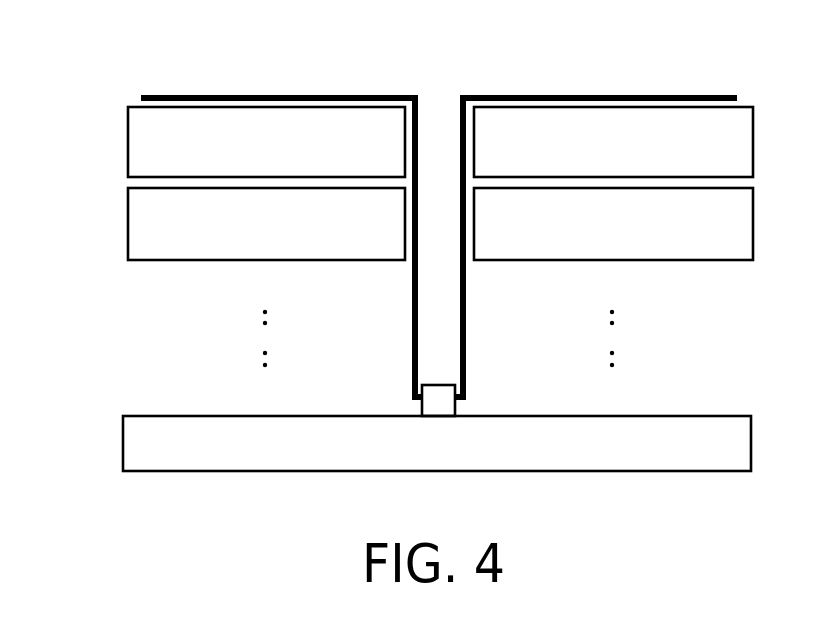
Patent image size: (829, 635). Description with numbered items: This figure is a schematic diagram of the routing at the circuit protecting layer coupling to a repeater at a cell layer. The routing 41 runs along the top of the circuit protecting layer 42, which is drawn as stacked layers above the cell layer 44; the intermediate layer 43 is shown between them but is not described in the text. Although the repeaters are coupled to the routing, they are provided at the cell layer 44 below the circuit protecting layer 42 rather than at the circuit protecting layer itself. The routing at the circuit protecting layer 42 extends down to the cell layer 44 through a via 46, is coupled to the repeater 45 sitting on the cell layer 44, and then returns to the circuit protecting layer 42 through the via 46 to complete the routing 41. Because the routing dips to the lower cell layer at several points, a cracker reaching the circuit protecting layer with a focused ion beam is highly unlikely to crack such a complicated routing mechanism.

The routing 41 is at (235, 96).
The circuit protecting layer 42 is at (128, 143).
The second layer 43 is at (128, 224).
The cell layer 44 is at (122, 443).
The repeater 45 is at (458, 411).
The via 46 is at (437, 95).